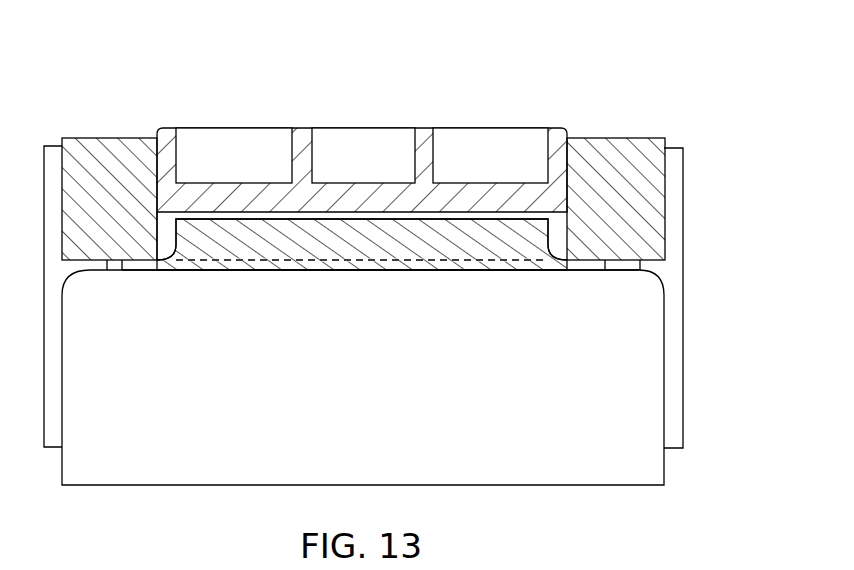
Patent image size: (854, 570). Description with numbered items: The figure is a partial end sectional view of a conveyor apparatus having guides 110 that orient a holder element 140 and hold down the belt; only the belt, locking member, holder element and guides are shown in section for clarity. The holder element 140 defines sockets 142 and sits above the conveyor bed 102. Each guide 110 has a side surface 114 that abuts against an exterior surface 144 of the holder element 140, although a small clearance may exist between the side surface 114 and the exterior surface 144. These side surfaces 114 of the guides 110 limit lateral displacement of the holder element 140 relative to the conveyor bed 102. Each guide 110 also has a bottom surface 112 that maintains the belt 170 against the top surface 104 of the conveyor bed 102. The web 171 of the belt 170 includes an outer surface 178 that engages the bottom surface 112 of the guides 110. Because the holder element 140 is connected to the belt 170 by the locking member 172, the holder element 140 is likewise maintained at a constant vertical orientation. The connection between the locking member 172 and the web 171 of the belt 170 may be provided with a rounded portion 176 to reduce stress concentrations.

The conveyor bed 102 is at (653, 402).
The top surface 104 is at (660, 256).
The guide 110 is at (93, 115).
The bottom surface 112 is at (107, 270).
The side surface 114 is at (163, 163).
The holder element 140 is at (577, 120).
The socket 142 is at (477, 148).
The exterior surface 144 is at (157, 182).
The belt 170 is at (507, 283).
The web 171 is at (165, 270).
The locking member 172 is at (278, 243).
The rounded portion 176 is at (168, 250).
The outer surface 178 is at (592, 258).